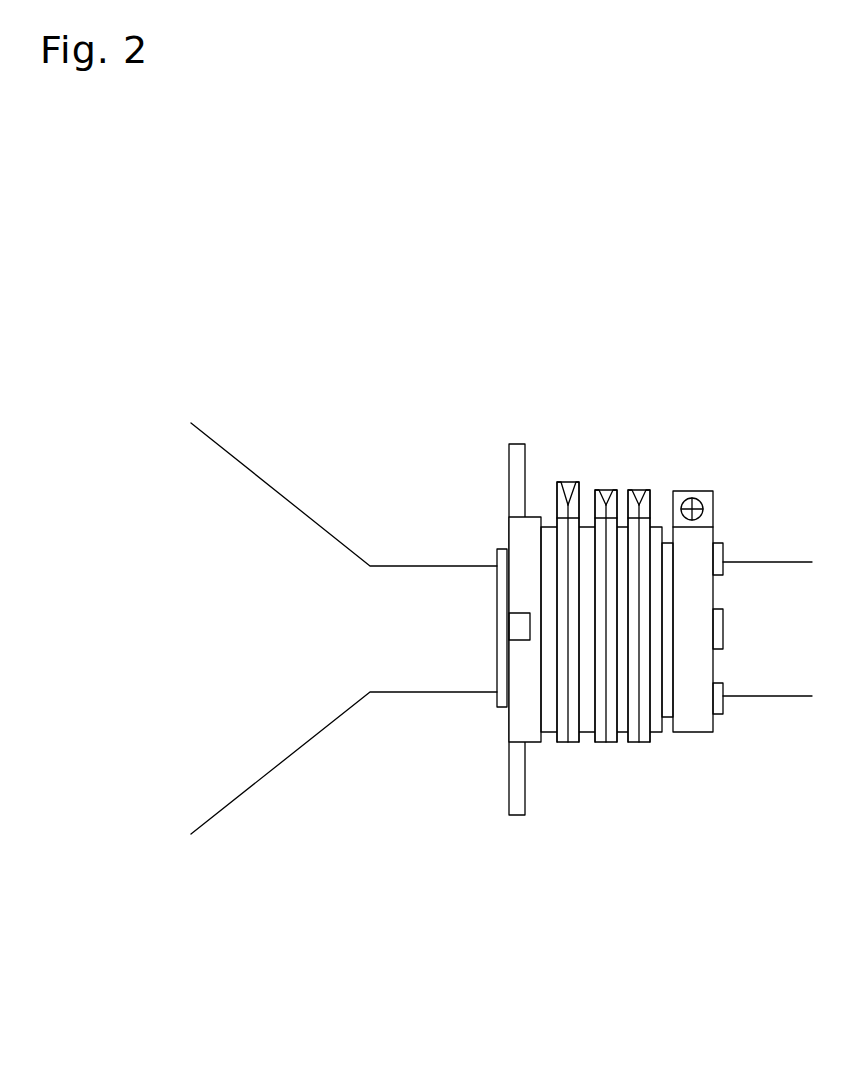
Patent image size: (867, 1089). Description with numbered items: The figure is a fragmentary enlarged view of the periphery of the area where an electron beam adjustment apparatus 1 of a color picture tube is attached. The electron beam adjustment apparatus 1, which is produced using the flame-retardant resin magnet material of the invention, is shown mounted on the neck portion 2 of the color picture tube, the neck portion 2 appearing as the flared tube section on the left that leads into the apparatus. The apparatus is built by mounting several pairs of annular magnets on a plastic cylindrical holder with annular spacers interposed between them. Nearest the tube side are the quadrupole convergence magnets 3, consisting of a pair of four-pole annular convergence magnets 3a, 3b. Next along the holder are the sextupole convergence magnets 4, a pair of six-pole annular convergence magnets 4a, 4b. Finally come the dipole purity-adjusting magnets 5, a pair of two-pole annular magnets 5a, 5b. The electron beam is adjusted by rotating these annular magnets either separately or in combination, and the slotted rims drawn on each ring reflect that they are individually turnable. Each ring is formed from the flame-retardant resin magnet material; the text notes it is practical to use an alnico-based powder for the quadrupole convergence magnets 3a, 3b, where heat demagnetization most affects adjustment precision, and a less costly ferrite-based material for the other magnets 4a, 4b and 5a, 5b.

The electron beam adjustment apparatus 1 is at (649, 609).
The neck portion 2 is at (423, 676).
The quadrupole convergence magnets 3 is at (545, 508).
The quadrupole convergence magnet 3a is at (560, 482).
The quadrupole convergence magnet 3b is at (577, 482).
The sextupole convergence magnets 4 is at (601, 716).
The sextupole convergence magnet 4a is at (598, 743).
The sextupole convergence magnet 4b is at (612, 743).
The dipole purity-adjusting magnets 5 is at (680, 529).
The dipole purity-adjusting magnet 5a is at (630, 488).
The dipole purity-adjusting magnet 5b is at (648, 490).